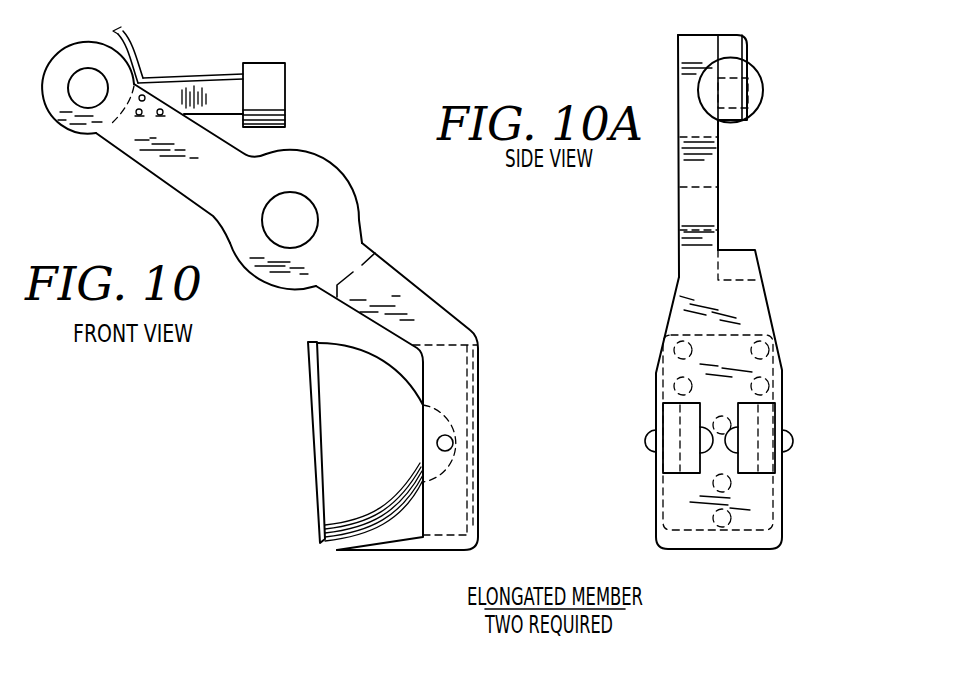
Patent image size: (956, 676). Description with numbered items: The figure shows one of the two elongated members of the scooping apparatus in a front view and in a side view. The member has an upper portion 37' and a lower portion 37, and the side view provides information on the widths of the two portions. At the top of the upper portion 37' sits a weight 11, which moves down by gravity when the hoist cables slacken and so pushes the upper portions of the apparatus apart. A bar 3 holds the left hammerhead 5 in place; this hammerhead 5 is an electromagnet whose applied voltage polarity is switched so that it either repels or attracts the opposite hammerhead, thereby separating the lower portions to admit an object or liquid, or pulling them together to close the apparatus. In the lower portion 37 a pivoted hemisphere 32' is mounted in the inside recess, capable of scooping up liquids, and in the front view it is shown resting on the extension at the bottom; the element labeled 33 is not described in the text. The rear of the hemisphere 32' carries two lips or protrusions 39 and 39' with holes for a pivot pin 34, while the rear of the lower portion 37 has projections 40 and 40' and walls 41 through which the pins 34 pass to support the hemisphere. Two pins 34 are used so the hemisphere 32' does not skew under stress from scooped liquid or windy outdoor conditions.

In FIG. 10, the bar 3 is at (213, 80).
In FIG. 10, the left hammerhead 5 is at (263, 63).
In FIG. 10A, the weight 11 is at (750, 47).
In FIG. 10, the pivoted hemisphere 32' is at (349, 352).
In FIG. 10, the plate 33 is at (309, 433).
In FIG. 10, the pivot pin 34 is at (455, 443).
In FIG. 10A, the pivot pin 34 is at (793, 433).
In FIG. 10, the lower portion 37 is at (359, 350).
In FIG. 10A, the lower portion 37 is at (749, 399).
In FIG. 10, the upper portion 37' is at (154, 142).
In FIG. 10A, the upper portion 37' is at (745, 156).
In FIG. 10A, the lip 39 is at (651, 467).
In FIG. 10A, the lip 39' is at (801, 468).
In FIG. 10A, the projection 40 is at (664, 488).
In FIG. 10A, the projection 40' is at (782, 493).
In FIG. 10, the walls 41 is at (422, 517).